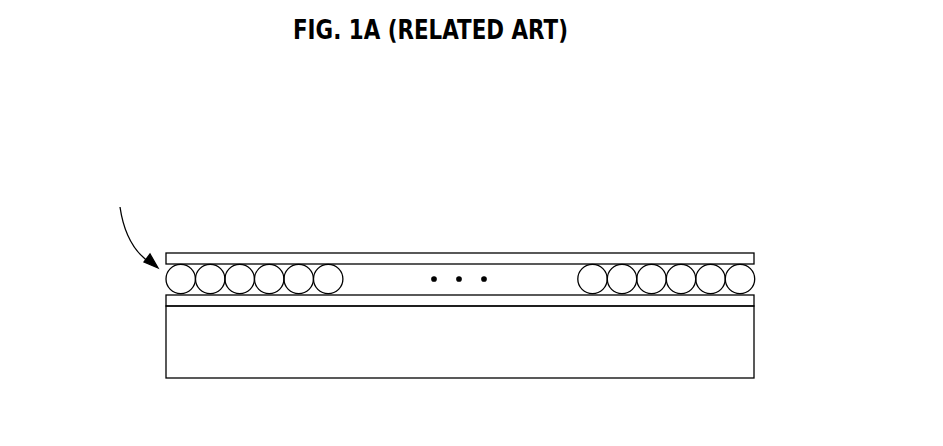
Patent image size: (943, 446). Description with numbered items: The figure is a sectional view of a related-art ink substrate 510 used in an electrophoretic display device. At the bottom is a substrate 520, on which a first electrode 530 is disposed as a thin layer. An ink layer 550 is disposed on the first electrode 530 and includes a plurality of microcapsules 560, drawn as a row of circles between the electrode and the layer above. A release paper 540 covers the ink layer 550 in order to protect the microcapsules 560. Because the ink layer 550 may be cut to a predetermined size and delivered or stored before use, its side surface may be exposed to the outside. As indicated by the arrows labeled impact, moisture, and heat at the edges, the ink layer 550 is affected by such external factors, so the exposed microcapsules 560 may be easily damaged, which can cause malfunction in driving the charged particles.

The ink substrate 510 is at (157, 114).
The substrate 520 is at (524, 361).
The first electrode 530 is at (402, 297).
The release paper 540 is at (467, 258).
The ink layer 550 is at (762, 268).
The microcapsules 560 is at (681, 275).